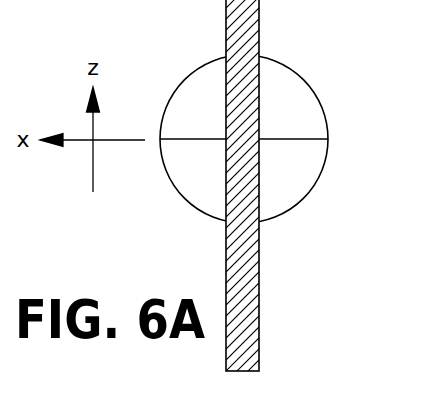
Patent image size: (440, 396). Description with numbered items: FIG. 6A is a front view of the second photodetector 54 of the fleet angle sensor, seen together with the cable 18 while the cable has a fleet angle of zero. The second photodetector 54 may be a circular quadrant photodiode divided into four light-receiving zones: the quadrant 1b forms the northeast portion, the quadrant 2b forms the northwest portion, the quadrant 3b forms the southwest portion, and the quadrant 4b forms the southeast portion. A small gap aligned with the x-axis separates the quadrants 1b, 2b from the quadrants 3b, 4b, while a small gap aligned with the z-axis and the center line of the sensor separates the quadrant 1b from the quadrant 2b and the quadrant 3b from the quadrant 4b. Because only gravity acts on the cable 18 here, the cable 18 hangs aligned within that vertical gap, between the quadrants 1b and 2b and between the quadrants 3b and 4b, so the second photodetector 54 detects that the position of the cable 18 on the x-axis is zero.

The second photodetector 54 is at (276, 136).
The cable 18 is at (260, 300).
The quadrant 1b is at (284, 120).
The quadrant 2b is at (205, 120).
The quadrant 3b is at (205, 160).
The quadrant 4b is at (282, 160).